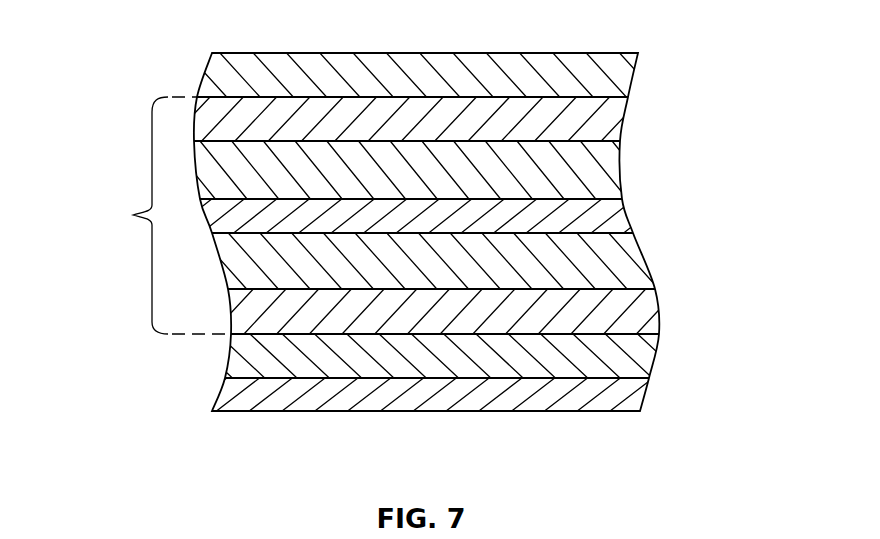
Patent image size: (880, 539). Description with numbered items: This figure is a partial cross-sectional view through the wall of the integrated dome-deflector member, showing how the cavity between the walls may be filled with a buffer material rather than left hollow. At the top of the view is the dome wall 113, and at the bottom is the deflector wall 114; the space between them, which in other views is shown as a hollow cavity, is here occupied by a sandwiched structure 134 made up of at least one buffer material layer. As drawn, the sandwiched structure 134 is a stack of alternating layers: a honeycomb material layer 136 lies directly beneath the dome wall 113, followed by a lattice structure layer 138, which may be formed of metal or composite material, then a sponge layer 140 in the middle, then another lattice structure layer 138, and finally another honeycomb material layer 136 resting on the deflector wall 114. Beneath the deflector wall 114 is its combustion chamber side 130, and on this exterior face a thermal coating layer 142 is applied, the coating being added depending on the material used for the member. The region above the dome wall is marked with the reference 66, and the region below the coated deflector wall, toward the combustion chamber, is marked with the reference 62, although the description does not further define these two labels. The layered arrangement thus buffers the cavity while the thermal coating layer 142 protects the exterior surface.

The first side / outer surface 66 is at (216, 33).
The second side / inner surface 62 is at (323, 467).
The dome wall 113 is at (340, 70).
The deflector wall 114 is at (638, 358).
The combustion chamber side 130 is at (252, 377).
The sandwiched structure 134 is at (133, 215).
The honeycomb material layer 136 is at (612, 122).
The lattice structure layer 138 is at (610, 174).
The sponge layer 140 is at (618, 224).
The thermal coating layer 142 is at (598, 400).